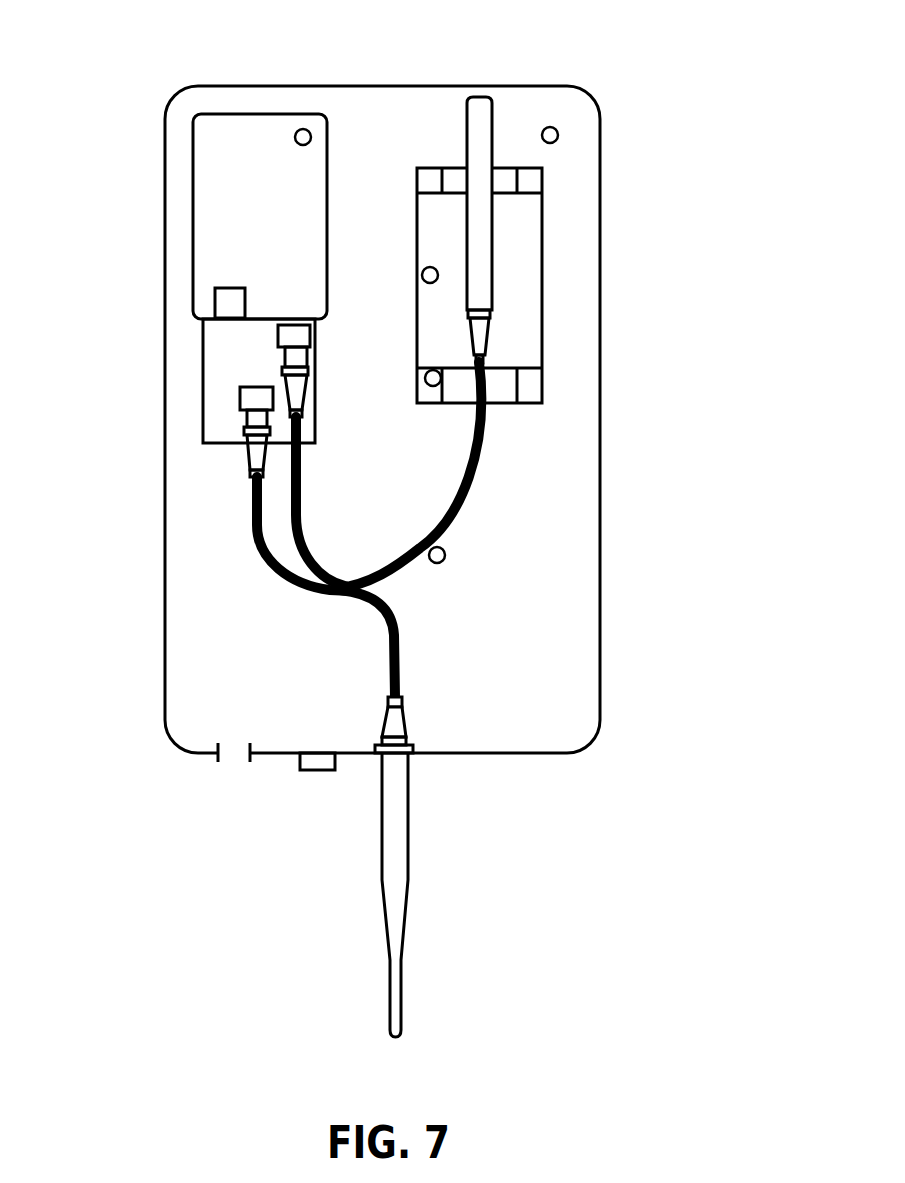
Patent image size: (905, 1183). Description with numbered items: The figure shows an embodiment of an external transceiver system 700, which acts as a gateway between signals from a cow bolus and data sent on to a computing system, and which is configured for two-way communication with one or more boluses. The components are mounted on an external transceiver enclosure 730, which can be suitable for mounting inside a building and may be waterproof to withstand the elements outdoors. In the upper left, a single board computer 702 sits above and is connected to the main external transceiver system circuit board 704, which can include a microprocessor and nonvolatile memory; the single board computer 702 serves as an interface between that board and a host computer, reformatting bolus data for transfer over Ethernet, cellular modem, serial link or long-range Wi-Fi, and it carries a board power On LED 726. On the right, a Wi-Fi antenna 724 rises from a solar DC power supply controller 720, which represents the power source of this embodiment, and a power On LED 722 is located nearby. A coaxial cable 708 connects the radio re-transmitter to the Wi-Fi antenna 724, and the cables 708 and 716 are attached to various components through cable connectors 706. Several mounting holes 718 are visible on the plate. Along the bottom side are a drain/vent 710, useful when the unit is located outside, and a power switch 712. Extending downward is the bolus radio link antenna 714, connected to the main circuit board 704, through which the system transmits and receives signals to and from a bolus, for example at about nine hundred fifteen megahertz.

The external transceiver system 700 is at (393, 40).
The single board computer 702 is at (195, 182).
The main external transceiver system circuit board 704 is at (202, 347).
The cable connectors 706 is at (252, 458).
The coaxial cable 708 is at (263, 553).
The drain/vent 710 is at (226, 780).
The power switch 712 is at (318, 771).
The bolus radio link antenna 714 is at (408, 852).
The cable 716 is at (402, 672).
The mounting holes 718 is at (422, 275).
The solar DC power supply controller 720 is at (545, 290).
The power On LED 722 is at (558, 135).
The Wi-Fi antenna 724 is at (492, 118).
The board power On LED 726 is at (295, 137).
The external transceiver enclosure 730 is at (600, 477).